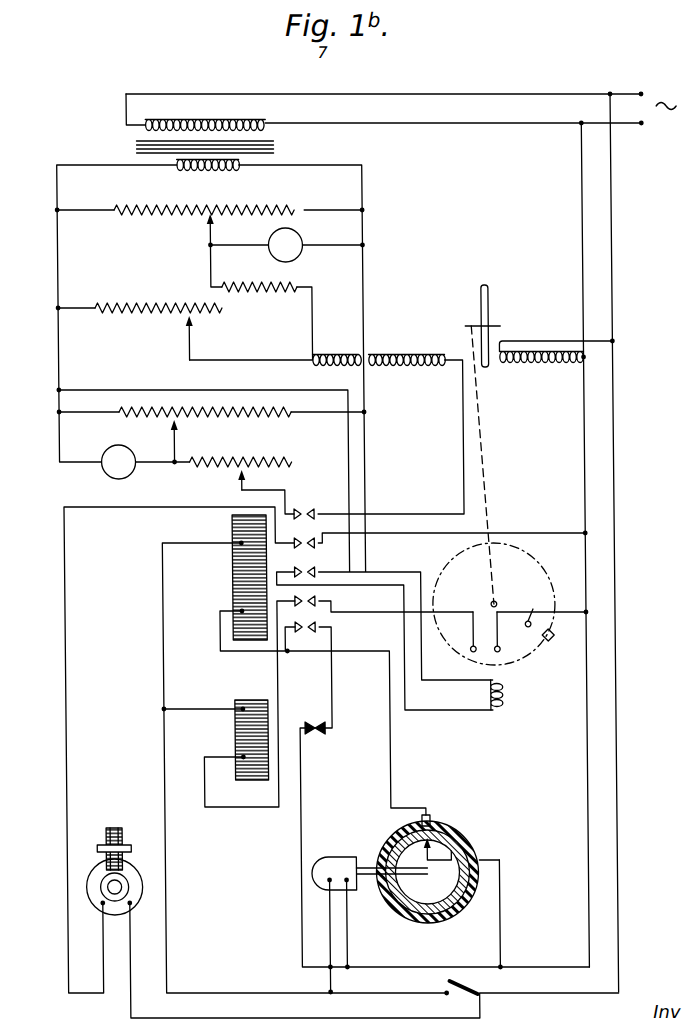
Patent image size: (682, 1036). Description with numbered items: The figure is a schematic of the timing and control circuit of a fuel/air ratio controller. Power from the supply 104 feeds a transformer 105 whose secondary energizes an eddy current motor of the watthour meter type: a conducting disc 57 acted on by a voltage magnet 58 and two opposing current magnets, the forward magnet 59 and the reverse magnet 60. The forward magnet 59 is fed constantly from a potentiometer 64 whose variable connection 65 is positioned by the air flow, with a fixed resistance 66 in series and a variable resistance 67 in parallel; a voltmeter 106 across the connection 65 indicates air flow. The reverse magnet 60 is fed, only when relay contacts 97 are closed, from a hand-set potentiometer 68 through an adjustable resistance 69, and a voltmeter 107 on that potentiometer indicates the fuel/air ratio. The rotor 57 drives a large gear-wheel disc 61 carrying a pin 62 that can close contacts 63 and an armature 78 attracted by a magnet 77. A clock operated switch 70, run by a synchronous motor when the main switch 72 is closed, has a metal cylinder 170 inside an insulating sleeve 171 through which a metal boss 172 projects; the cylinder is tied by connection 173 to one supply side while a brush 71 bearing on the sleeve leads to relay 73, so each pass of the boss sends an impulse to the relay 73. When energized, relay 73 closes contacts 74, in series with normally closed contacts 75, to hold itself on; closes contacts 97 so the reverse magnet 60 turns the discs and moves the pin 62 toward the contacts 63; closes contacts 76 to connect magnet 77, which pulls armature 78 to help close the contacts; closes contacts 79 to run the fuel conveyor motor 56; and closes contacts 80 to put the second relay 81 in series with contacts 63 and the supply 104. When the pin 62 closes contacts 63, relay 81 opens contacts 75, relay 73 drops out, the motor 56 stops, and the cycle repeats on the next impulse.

The supply 104 is at (518, 95).
The transformer 105 is at (278, 143).
The potentiometer 64 is at (170, 220).
The variable connection 65 is at (215, 223).
The voltmeter 106 is at (300, 258).
The variable resistance 67 is at (163, 316).
The fixed resistance 66 is at (291, 296).
The forward magnet 59 is at (349, 352).
The reverse magnet 60 is at (430, 351).
The disc 57 is at (490, 322).
The voltage magnet 58 is at (558, 364).
The hand-set potentiometer 68 is at (271, 417).
The voltmeter 107 is at (105, 471).
The adjustable resistance 69 is at (195, 467).
The relay contacts 97 is at (302, 509).
The relay 73 is at (230, 598).
The contacts 79 is at (307, 546).
The contacts 76 is at (308, 576).
The contacts 80 is at (308, 604).
The contacts 74 is at (305, 636).
The second relay 81 is at (232, 718).
The contacts 75 is at (314, 734).
The disc 61 is at (540, 574).
The pin 62 is at (533, 607).
The contacts 63 is at (496, 648).
The armature 78 is at (547, 642).
The magnet 77 is at (501, 697).
The metal boss 172 is at (414, 820).
The clock operated switch 70 is at (364, 853).
The brush 71 is at (446, 814).
The insulating sleeve 171 is at (468, 845).
The metal cylinder 170 is at (458, 884).
The connection 173 is at (501, 898).
The main switch 72 is at (472, 989).
The motor 56 is at (134, 887).